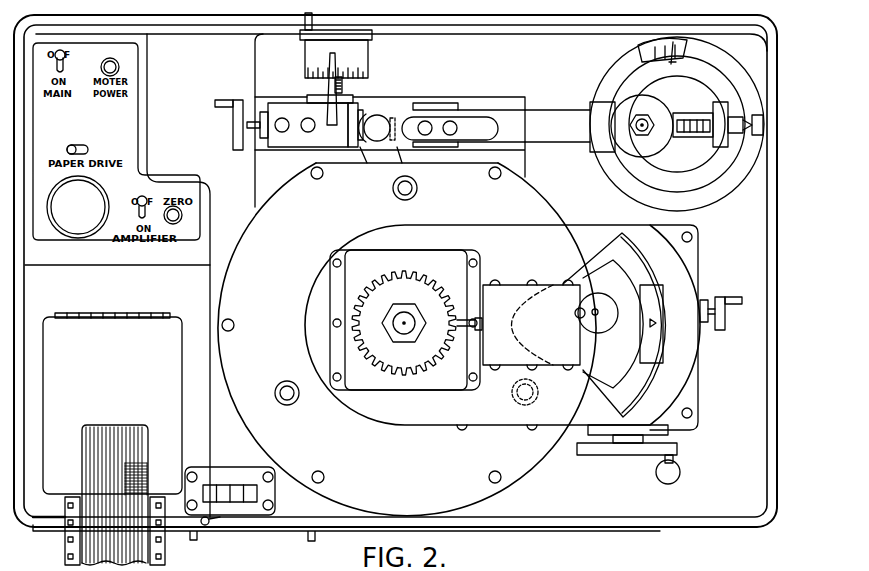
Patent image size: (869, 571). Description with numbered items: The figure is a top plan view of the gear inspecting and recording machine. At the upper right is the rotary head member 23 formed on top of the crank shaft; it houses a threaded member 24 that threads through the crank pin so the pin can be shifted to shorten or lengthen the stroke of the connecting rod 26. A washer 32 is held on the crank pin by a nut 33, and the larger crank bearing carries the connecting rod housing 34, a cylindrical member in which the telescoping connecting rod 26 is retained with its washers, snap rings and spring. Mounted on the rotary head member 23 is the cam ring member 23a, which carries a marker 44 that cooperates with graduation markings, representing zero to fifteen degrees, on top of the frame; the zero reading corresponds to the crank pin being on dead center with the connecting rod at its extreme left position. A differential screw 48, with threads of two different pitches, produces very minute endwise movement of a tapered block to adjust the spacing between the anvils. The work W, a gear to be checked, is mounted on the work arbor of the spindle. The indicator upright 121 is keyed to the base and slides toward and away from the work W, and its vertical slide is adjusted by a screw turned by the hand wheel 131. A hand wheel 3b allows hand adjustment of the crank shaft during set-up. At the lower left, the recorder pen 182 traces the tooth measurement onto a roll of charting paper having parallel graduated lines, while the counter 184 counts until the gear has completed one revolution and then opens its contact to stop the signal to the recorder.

The differential screw 48 is at (365, 53).
The connecting rod 26 is at (472, 115).
The connecting rod housing 34 is at (557, 110).
The marker 44 is at (688, 53).
The nut 33 is at (652, 114).
The threaded member 24 is at (690, 118).
The washer 32 is at (662, 146).
The rotary head member 23 is at (697, 177).
The cam ring member 23a is at (632, 183).
The indicator upright 121 is at (585, 268).
The hand wheel 131 is at (602, 333).
The work W is at (382, 283).
The recorder pen 182 is at (123, 463).
The counter 184 is at (215, 470).
The hand wheel 3b is at (590, 455).